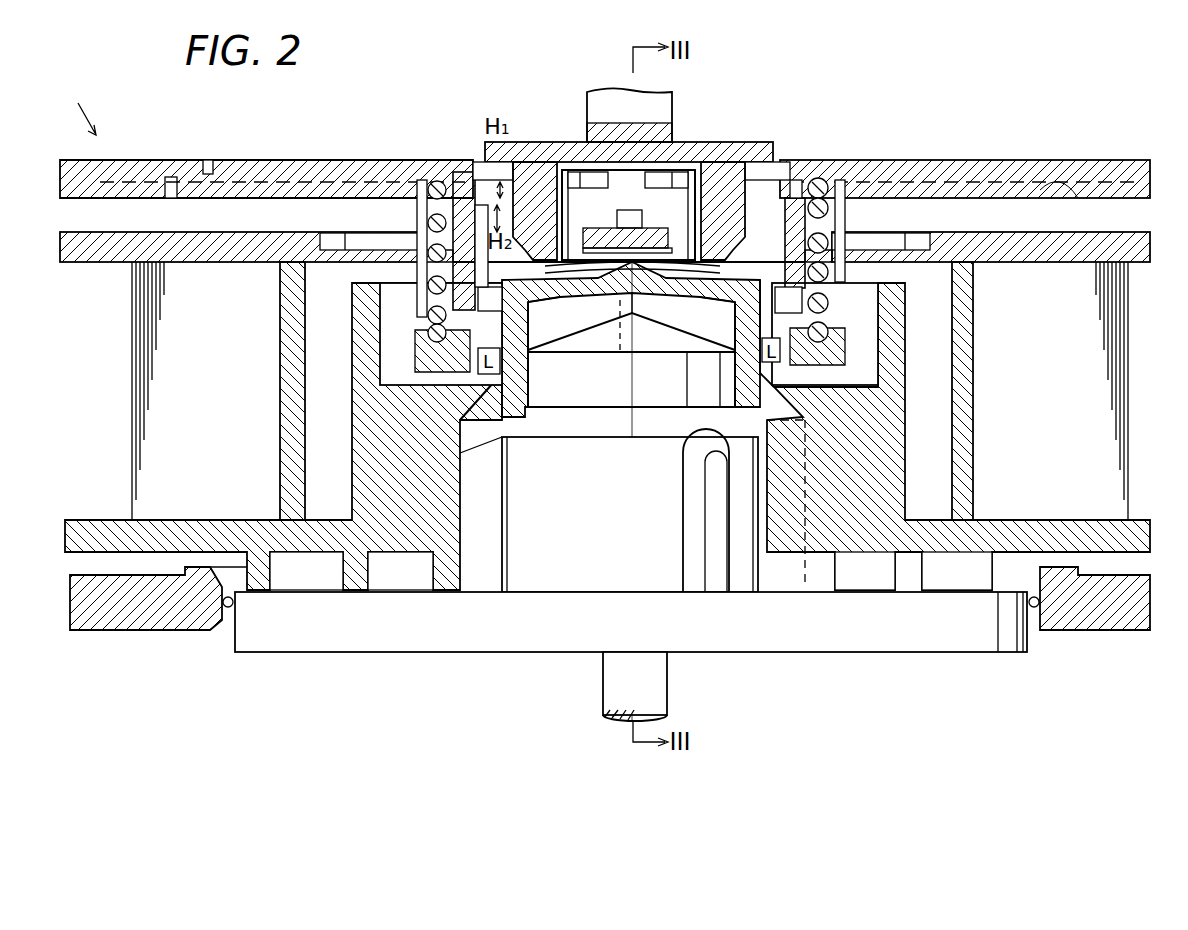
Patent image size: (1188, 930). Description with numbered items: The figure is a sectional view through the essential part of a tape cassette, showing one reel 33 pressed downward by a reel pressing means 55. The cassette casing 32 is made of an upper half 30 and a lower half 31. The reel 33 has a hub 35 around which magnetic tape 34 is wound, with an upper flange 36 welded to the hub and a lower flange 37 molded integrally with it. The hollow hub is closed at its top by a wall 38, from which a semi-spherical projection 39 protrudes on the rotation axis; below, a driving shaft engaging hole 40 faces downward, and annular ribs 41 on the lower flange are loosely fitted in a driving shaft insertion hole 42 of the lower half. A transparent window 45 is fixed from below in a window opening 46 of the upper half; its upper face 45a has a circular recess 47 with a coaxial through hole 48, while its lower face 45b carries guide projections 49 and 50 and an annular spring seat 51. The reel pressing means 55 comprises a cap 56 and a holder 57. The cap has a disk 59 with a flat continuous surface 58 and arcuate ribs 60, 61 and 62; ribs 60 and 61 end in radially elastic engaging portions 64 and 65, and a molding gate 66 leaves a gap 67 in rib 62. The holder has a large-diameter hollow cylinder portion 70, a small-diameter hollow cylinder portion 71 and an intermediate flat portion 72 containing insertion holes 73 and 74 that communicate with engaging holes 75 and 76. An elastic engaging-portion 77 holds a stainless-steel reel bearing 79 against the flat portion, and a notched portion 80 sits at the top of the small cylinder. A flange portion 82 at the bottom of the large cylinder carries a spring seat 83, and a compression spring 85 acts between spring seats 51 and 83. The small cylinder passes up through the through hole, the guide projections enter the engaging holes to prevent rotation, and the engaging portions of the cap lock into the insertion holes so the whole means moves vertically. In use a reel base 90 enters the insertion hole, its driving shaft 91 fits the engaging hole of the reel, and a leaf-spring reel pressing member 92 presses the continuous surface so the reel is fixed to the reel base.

The upper half 30 is at (128, 160).
The lower half 31 is at (130, 625).
The cassette casing 32 is at (71, 107).
The reel 33 is at (103, 314).
The magnetic tape 34 is at (135, 367).
The hub 35 is at (425, 512).
The upper flange 36 is at (205, 240).
The lower flange 37 is at (100, 520).
The wall 38 is at (555, 350).
The semi-spherical projection 39 is at (636, 305).
The driving shaft engaging hole 40 is at (760, 540).
The annular ribs 41 is at (352, 584).
The driving shaft insertion hole 42 is at (228, 612).
The transparent window 45 is at (908, 160).
The upper face 45a is at (975, 160).
The lower face 45b is at (1062, 198).
The window opening 46 is at (215, 160).
The circular recess 47 is at (478, 175).
The through hole 48 is at (770, 175).
The guide projection 49 is at (478, 293).
The guide projection 50 is at (803, 300).
The spring seat 51 is at (822, 185).
The reel pressing means 55 is at (552, 85).
The cap 56 is at (540, 142).
The holder 57 is at (510, 440).
The continuous surface 58 is at (716, 162).
The disk 59 is at (580, 162).
The arcuate rib 60 is at (550, 170).
The arcuate rib 61 is at (715, 172).
The arcuate rib 62 is at (590, 172).
The engaging portion 64 is at (536, 290).
The engaging portion 65 is at (740, 290).
The gate 66 is at (630, 178).
The gap 67 is at (658, 188).
The large-diameter hollow cylinder portion 70 is at (437, 333).
The small-diameter hollow cylinder portion 71 is at (505, 170).
The intermediate flat portion 72 is at (590, 322).
The insertion hole 73 is at (578, 298).
The insertion hole 74 is at (692, 290).
The engaging hole 75 is at (545, 368).
The engaging hole 76 is at (730, 345).
The elastic engaging-portion 77 is at (620, 352).
The reel bearing 79 is at (665, 335).
The notched portion 80 is at (597, 188).
The flange portion 82 is at (425, 378).
The spring seat 83 is at (440, 350).
The spring 85 is at (428, 232).
The reel base 90 is at (475, 642).
The driving shaft 91 is at (540, 582).
The reel pressing member 92 is at (668, 142).